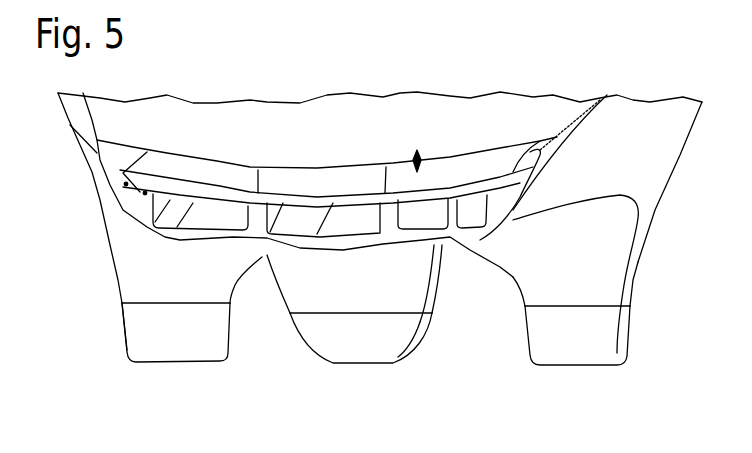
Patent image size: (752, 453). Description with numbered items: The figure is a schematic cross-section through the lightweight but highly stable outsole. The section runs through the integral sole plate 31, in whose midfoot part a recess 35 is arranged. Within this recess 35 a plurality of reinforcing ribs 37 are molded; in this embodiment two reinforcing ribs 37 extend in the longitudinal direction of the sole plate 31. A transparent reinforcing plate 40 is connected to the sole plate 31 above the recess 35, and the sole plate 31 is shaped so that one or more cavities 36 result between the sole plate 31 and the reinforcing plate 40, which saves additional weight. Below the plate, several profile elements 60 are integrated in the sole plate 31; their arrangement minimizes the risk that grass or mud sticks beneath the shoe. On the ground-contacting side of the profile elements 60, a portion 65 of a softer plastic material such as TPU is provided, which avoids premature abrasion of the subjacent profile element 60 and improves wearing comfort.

The sole plate 31 is at (88, 178).
The recess 35 is at (165, 152).
The cavities 36 is at (218, 200).
The reinforcing ribs 37 is at (258, 168).
The reinforcing plate 40 is at (418, 148).
The profile elements 60 is at (130, 279).
The portion 65 is at (172, 350).